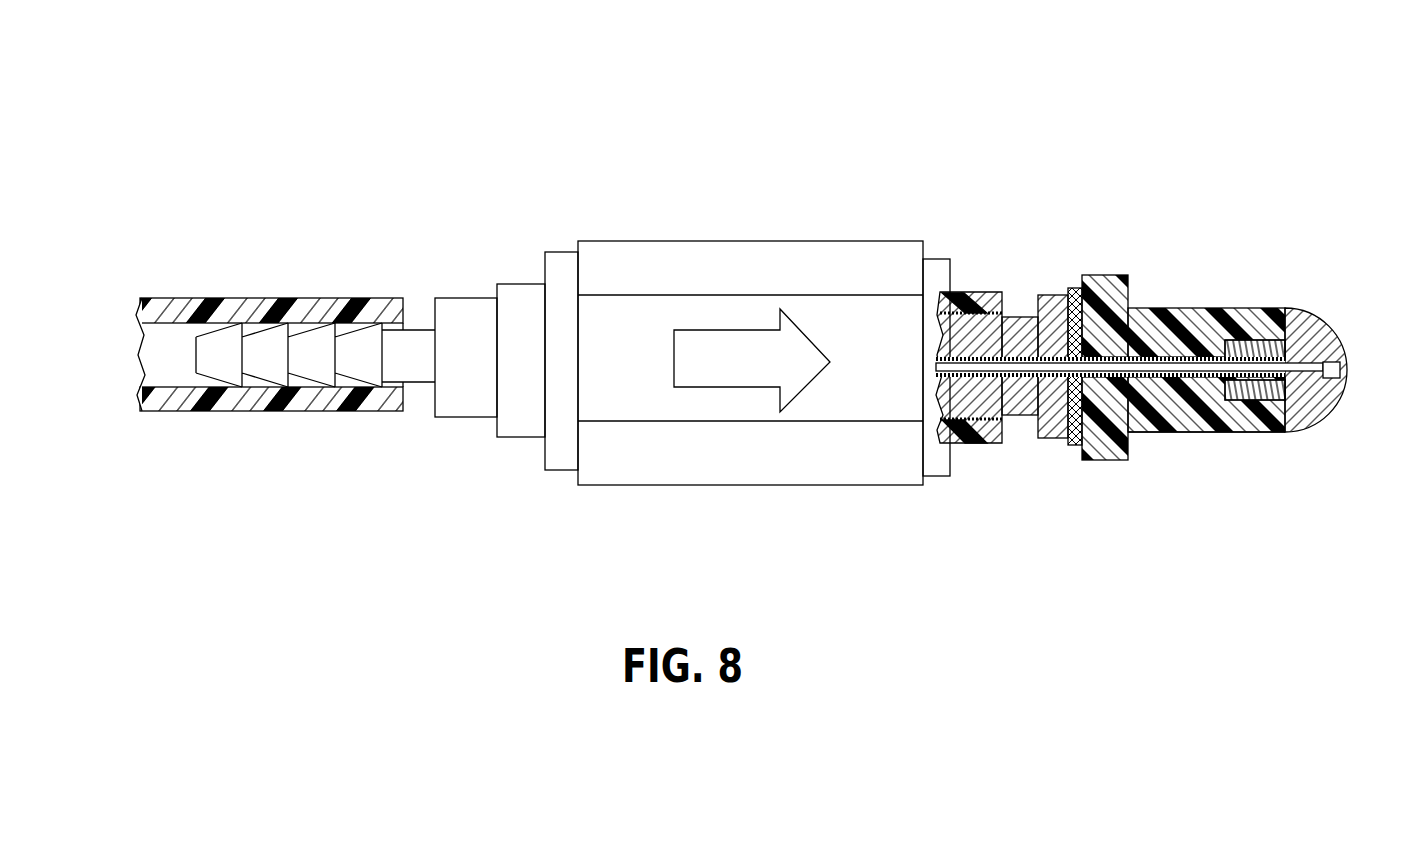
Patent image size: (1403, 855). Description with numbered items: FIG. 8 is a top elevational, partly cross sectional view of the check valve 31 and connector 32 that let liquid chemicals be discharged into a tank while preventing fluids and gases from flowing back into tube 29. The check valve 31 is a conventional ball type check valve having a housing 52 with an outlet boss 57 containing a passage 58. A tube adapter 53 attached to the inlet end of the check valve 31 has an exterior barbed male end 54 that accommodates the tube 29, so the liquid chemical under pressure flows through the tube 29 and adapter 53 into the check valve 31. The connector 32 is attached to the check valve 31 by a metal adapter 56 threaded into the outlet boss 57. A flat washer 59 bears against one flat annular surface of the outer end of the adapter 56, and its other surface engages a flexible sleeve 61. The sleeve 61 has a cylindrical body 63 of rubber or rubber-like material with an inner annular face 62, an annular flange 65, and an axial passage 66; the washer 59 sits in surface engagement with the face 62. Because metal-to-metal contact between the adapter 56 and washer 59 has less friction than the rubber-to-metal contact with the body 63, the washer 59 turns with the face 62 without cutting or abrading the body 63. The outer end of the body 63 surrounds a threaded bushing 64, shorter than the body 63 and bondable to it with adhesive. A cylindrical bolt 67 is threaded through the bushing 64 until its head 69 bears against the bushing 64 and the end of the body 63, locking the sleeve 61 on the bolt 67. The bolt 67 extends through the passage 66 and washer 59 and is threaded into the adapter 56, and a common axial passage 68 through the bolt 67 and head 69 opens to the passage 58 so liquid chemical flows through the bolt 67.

The tube 29 is at (223, 405).
The check valve 31 is at (836, 160).
The connector 32 is at (1041, 213).
The housing 52 is at (722, 241).
The tube adapter 53 is at (469, 325).
The barbed male end 54 is at (273, 350).
The metal adapter 56 is at (1018, 407).
The outlet boss 57 is at (972, 300).
The passage 58 is at (938, 440).
The flat washer 59 is at (1076, 292).
The flexible sleeve 61 is at (1234, 452).
The inner annular face 62 is at (1110, 280).
The cylindrical body 63 is at (1157, 407).
The threaded bushing 64 is at (1248, 342).
The annular flange 65 is at (1117, 462).
The axial passage 66 is at (1178, 350).
The bolt 67 is at (1083, 445).
The axial passage 68 is at (1287, 378).
The head 69 is at (1302, 343).